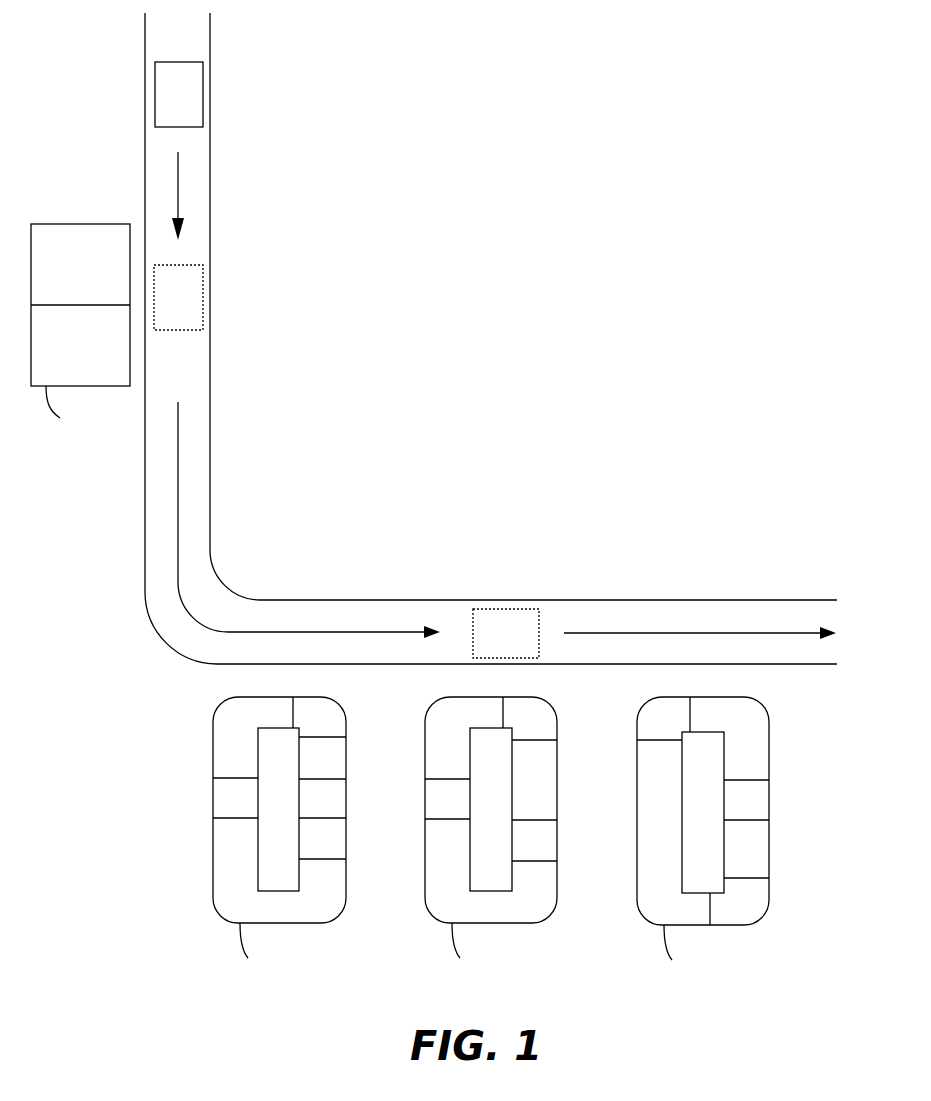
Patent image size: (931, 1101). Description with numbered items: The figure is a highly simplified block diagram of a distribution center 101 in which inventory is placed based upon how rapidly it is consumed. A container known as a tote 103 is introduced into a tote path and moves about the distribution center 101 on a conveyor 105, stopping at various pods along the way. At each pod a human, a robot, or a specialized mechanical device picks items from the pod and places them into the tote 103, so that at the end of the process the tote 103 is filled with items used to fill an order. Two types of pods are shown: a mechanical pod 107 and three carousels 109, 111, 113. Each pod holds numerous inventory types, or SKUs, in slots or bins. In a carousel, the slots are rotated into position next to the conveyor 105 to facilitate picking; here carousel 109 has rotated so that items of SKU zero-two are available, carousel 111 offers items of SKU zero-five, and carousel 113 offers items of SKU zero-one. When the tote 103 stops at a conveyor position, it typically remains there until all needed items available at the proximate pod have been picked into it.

The distribution center 101 is at (593, 97).
The tote 103 is at (186, 62).
The conveyor 105 is at (204, 229).
The mechanical pod 107 is at (75, 223).
The carousel 109 is at (213, 870).
The carousel 111 is at (425, 870).
The carousel 113 is at (637, 870).